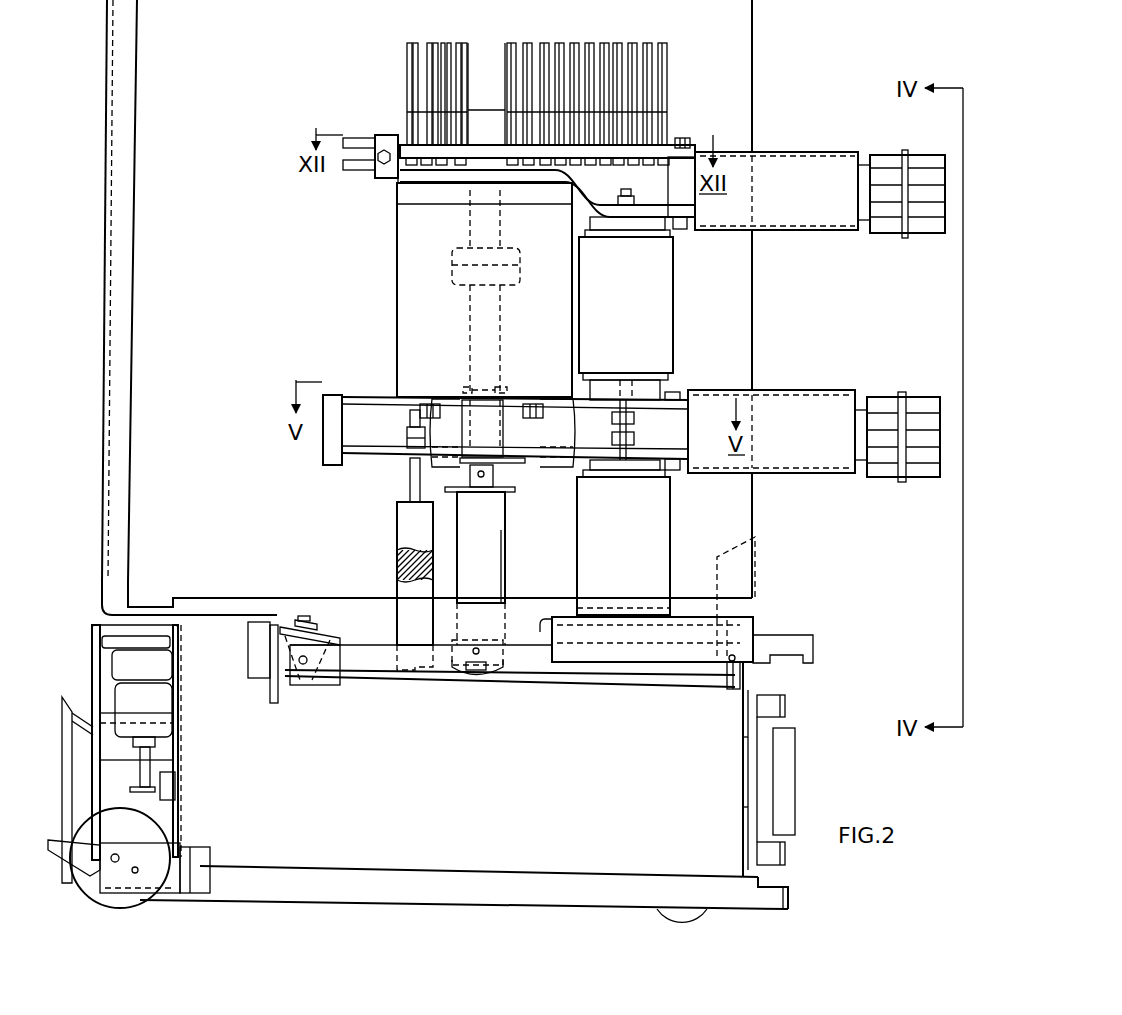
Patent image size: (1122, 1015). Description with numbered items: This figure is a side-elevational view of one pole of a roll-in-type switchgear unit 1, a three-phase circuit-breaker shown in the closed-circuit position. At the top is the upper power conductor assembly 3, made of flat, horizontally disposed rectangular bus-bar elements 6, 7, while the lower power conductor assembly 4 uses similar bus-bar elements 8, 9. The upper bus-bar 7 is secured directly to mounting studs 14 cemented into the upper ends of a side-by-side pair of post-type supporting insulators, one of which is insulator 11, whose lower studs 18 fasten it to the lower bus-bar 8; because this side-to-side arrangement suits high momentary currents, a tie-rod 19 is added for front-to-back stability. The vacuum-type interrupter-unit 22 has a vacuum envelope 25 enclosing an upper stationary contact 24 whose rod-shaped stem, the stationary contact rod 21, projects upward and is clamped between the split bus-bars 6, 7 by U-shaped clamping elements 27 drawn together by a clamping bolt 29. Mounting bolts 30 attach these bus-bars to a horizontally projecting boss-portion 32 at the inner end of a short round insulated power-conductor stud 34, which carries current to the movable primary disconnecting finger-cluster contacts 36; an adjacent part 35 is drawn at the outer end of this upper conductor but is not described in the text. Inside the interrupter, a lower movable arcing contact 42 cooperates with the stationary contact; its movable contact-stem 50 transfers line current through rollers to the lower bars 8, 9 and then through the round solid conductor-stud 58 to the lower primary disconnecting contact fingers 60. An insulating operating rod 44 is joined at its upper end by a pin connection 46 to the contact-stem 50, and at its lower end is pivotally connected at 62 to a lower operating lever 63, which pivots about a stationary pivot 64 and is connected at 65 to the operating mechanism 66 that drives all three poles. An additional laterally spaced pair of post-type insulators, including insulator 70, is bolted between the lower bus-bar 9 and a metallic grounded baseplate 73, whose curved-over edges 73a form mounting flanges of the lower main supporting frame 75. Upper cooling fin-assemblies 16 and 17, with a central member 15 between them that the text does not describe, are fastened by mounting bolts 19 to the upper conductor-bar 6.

The roll-in-type switchgear unit 1 is at (797, 38).
The upper power conductor assembly 3 is at (776, 152).
The lower power conductor assembly 4 is at (798, 390).
The bus-bar element 6 is at (358, 138).
The bus-bar element 7 is at (358, 170).
The bus-bar power-conductor element 8 is at (355, 395).
The bus-bar element 9 is at (373, 452).
The post-type supporting insulator 11 is at (673, 342).
The mounting stud 14 is at (628, 198).
The central plate 15 is at (504, 48).
The upper cooling fin-assembly 16 is at (425, 45).
The upper cooling fin-assembly 17 is at (617, 39).
The stud 18 is at (642, 386).
The mounting bolt 19 is at (432, 165).
The stationary contact rod 21 is at (464, 183).
The vacuum-type interrupter-unit 22 is at (397, 312).
The upper stationary contact 24 is at (528, 248).
The vacuum envelope 25 is at (397, 352).
The U-shaped clamping element 27 is at (387, 136).
The clamping bolt 29 is at (388, 178).
The mounting bolt 30 is at (683, 138).
The boss-portion 32 is at (690, 197).
The insulated power-conductor stud 34 is at (800, 232).
The connector 35 is at (815, 152).
The primary disconnecting finger-cluster contacts 36 is at (922, 152).
The lower movable arcing contact 42 is at (518, 288).
The insulating operating rod 44 is at (505, 582).
The pin connection 46 is at (493, 474).
The movable contact-stem 50 is at (470, 363).
The round solid conductor-stud 58 is at (772, 473).
The lower primary disconnecting contact fingers 60 is at (878, 397).
The pivotal connection 62 is at (476, 648).
The lower operating lever 63 is at (350, 645).
The stationary pivot 64 is at (735, 688).
The pivotal connection 65 is at (306, 667).
The operating mechanism 66 is at (228, 660).
The post-type supporting insulator 70 is at (676, 541).
The metallic grounded baseplate 73 is at (680, 620).
The curved-over edge 73a is at (760, 680).
The lower main supporting frame 75 is at (213, 597).